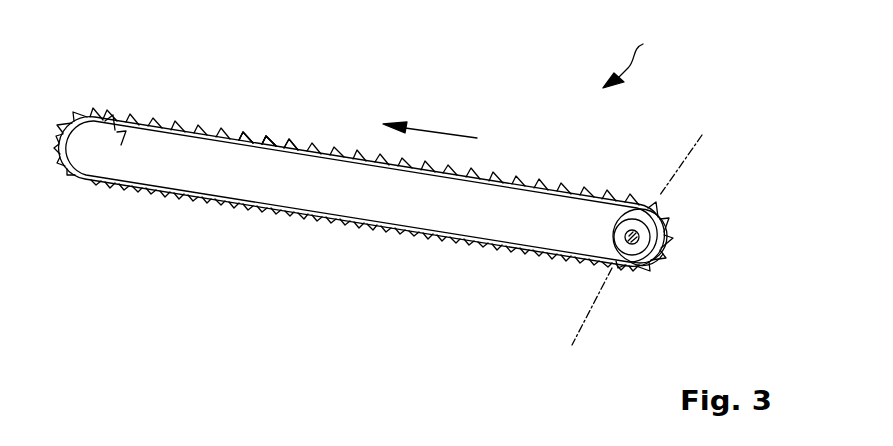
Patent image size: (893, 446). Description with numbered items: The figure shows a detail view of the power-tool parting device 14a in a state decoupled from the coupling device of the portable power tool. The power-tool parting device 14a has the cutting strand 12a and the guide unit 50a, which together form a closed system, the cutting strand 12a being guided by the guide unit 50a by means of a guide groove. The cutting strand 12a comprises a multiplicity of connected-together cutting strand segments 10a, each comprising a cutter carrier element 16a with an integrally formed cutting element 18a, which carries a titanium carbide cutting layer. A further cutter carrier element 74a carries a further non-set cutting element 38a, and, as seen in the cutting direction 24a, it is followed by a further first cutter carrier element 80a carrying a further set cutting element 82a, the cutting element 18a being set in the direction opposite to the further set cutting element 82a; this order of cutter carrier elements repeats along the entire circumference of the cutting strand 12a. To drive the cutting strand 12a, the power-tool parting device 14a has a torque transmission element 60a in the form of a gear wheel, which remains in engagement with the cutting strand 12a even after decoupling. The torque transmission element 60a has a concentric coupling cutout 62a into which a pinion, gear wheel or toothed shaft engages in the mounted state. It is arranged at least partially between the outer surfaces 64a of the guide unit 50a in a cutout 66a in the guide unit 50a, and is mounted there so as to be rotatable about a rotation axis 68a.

The cutting strand segment 10a is at (270, 172).
The cutting strand 12a is at (130, 118).
The power-tool parting device 14a is at (642, 53).
The cutter carrier element 16a is at (277, 135).
The cutting element 18a is at (270, 133).
The cutting direction 24a is at (437, 133).
The further non-set cutting element 38a is at (255, 130).
The guide unit 50a is at (190, 180).
The torque transmission element 60a is at (630, 253).
The coupling cutout 62a is at (623, 208).
The outer surfaces 64a is at (407, 201).
The cutout 66a is at (650, 257).
The rotation axis 68a is at (690, 143).
The further cutter carrier element 74a is at (263, 133).
The further first cutter carrier element 80a is at (250, 130).
The further set cutting element 82a is at (237, 130).